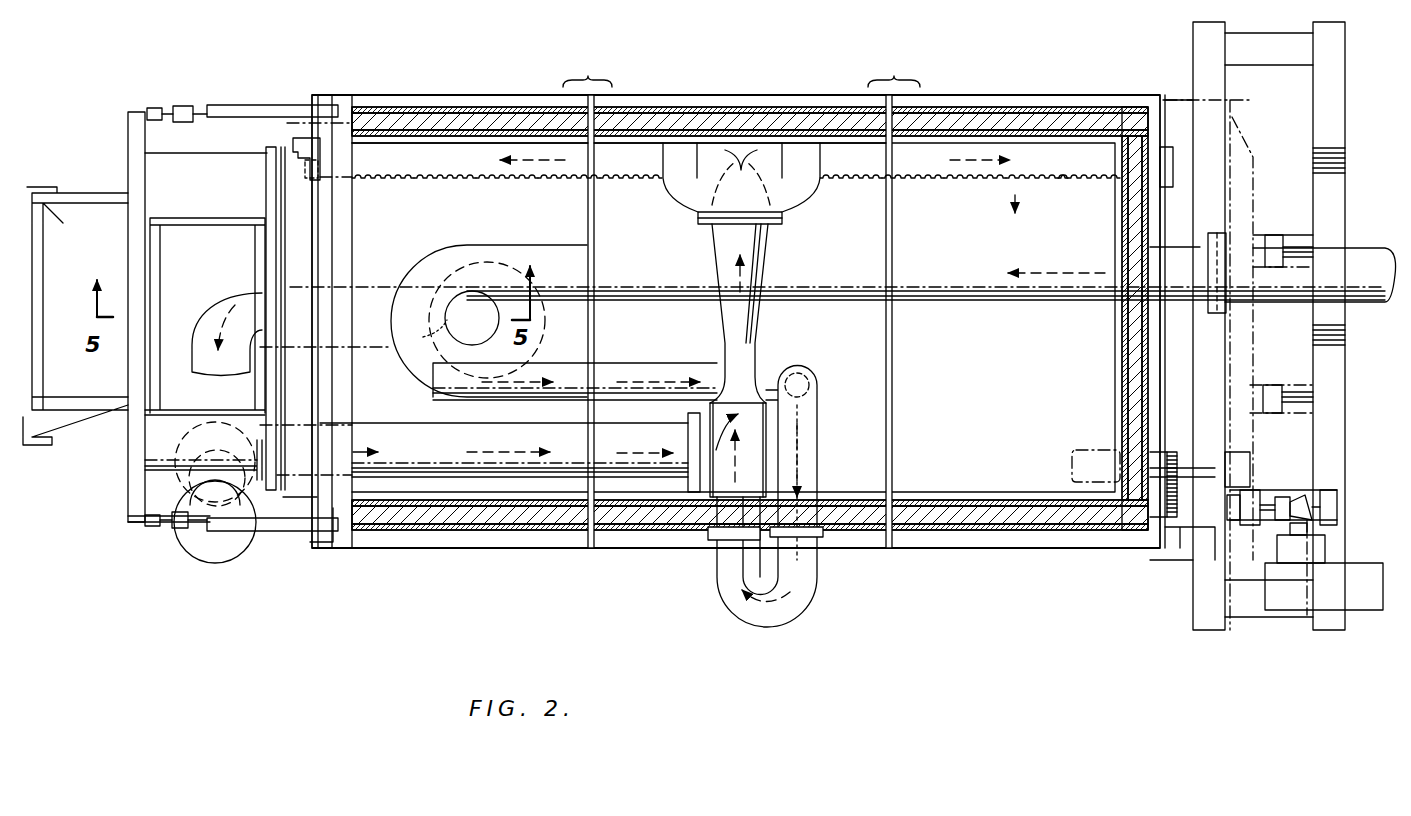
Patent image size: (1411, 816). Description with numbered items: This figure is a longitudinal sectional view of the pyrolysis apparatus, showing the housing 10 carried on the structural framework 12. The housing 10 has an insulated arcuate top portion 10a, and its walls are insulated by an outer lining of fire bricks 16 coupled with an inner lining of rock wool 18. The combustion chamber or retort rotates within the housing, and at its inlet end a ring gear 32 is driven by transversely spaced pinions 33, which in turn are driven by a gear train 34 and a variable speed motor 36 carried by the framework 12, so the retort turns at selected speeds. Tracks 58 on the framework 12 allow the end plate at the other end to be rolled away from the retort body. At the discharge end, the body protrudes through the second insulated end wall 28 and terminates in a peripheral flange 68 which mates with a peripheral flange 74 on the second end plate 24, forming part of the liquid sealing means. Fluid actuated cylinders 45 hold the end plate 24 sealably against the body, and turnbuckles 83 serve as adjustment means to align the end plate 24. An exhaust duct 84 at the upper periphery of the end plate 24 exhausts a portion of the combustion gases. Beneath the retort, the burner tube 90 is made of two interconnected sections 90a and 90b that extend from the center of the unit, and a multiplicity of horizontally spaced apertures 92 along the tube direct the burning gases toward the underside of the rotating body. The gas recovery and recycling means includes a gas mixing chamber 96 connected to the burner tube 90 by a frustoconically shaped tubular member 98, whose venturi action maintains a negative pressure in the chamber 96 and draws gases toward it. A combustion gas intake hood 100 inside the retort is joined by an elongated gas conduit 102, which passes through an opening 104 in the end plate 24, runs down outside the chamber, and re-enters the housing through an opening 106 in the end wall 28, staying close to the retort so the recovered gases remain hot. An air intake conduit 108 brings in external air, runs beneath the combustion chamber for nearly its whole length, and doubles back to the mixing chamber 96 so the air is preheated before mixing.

The housing 10 is at (958, 108).
The insulated arcuate top portion 10a is at (776, 122).
The structural framework 12 is at (1190, 608).
The fire bricks 16 is at (1037, 120).
The rock wool 18 is at (1092, 135).
The second end plate 24 is at (150, 165).
The second insulated end wall 28 is at (332, 505).
The ring gear 32 is at (1177, 465).
The pinions 33 is at (1183, 512).
The gear train 34 is at (1270, 493).
The variable speed motor 36 is at (1330, 600).
The fluid actuated cylinders 45 is at (258, 105).
The tracks 58 is at (1322, 250).
The peripheral flange 68 is at (281, 192).
The peripheral flange 74 is at (266, 150).
The turnbuckles 83 is at (181, 106).
The exhaust duct 84 is at (176, 218).
The burner tube 90 is at (722, 152).
The burner tube section 90a is at (843, 150).
The burner tube section 90b is at (460, 148).
The apertures 92 is at (418, 182).
The gas mixing chamber 96 is at (758, 436).
The frustoconically shaped tubular member 98 is at (740, 330).
The combustion gas intake hood 100 is at (498, 262).
The gas conduit 102 is at (220, 310).
The opening 104 is at (190, 462).
The opening 106 is at (322, 423).
The air intake conduit 108 is at (637, 366).